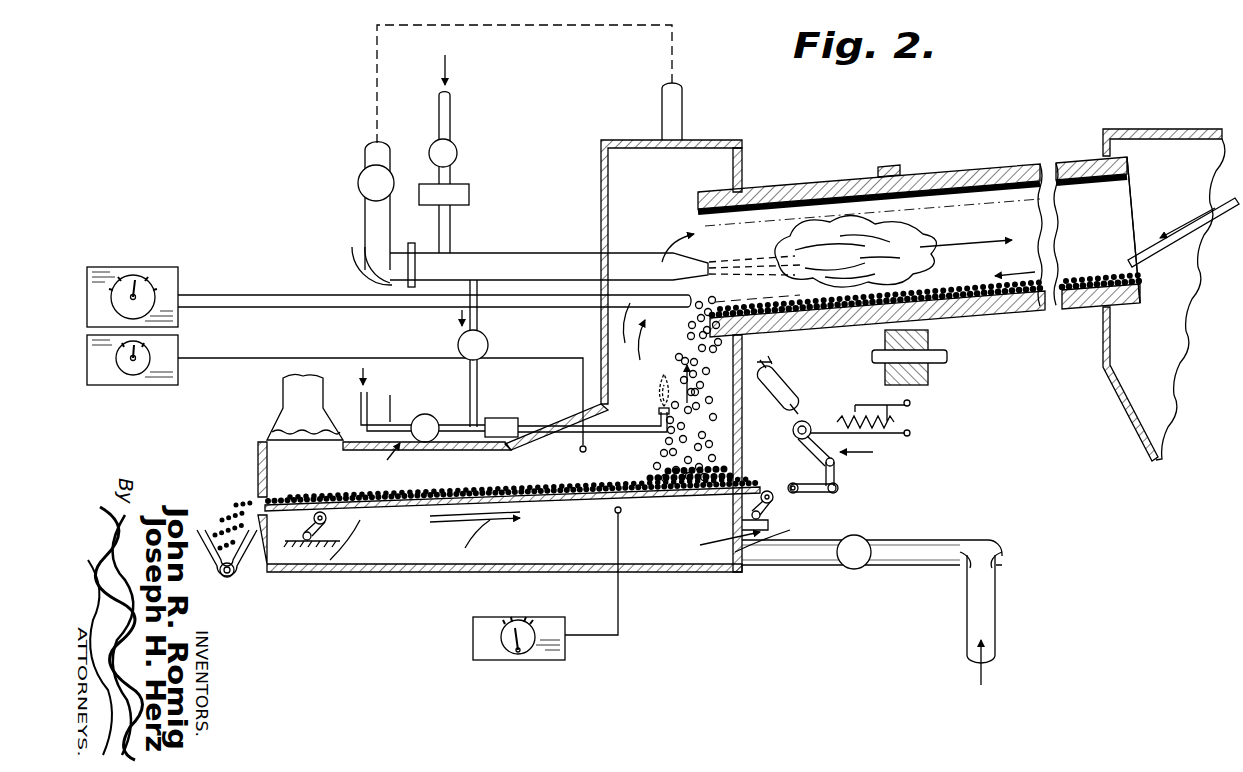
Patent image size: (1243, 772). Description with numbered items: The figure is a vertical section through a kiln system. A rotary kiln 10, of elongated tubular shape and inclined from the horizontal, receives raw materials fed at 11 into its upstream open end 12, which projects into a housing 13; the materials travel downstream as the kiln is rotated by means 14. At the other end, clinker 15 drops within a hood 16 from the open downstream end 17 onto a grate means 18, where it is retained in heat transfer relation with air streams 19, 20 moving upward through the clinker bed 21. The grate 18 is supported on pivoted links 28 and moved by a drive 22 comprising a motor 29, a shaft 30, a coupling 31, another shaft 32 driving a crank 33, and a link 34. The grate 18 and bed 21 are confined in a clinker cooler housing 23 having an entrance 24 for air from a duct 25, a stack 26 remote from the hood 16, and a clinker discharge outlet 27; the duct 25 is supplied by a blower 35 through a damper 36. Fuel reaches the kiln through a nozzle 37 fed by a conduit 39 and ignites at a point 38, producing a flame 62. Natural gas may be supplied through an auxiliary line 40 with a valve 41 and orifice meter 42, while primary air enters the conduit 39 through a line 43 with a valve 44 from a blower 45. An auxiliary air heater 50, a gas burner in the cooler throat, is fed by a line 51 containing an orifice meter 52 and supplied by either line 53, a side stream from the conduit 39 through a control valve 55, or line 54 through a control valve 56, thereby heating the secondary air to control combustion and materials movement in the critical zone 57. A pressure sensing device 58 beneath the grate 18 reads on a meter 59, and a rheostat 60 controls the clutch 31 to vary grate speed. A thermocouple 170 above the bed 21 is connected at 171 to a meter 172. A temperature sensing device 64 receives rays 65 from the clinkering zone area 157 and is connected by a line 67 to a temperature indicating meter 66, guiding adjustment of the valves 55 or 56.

The rotary kiln 10 is at (985, 323).
The raw materials feed 11 is at (1138, 258).
The upstream open end 12 is at (1134, 200).
The housing 13 is at (1178, 128).
The kiln rotating means 14 is at (930, 384).
The clinker 15 is at (688, 350).
The hood 16 is at (601, 350).
The downstream open end 17 is at (700, 222).
The grate means 18 is at (578, 505).
The air stream 19 is at (555, 535).
The air stream 20 is at (700, 412).
The clinker bed 21 is at (585, 482).
The drive 22 is at (869, 454).
The clinker cooler housing 23 is at (370, 572).
The entrance 24 is at (748, 566).
The duct 25 is at (800, 539).
The stack 26 is at (283, 388).
The clinker discharge outlet 27 is at (258, 503).
The pivoted links 28 is at (325, 521).
The motor 29 is at (778, 384).
The shaft 30 is at (805, 414).
The coupling 31 is at (793, 432).
The shaft 32 is at (815, 459).
The crank 33 is at (838, 466).
The link 34 is at (836, 490).
The blower 35 is at (1002, 560).
The damper 36 is at (853, 569).
The nozzle 37 is at (700, 255).
The ignition point 38 is at (776, 256).
The conduit 39 is at (573, 253).
The auxiliary line 40 is at (450, 112).
The valve 41 is at (458, 153).
The orifice meter 42 is at (470, 194).
The primary air line 43 is at (365, 216).
The valve 44 is at (358, 176).
The blower 45 is at (352, 247).
The auxiliary air heater 50 is at (658, 412).
The gas line 51 is at (603, 436).
The orifice meter 52 is at (513, 418).
The line 53 is at (478, 382).
The line 54 is at (369, 410).
The control valve 55 is at (488, 345).
The control valve 56 is at (432, 418).
The critical zone 57 is at (968, 262).
The pressure sensing device 58 is at (621, 512).
The meter 59 is at (530, 660).
The rheostat 60 is at (864, 412).
The flame 62 is at (854, 228).
The temperature sensing device 64 is at (680, 307).
The rays 65 is at (750, 311).
The temperature indicating meter 66 is at (120, 277).
The line 67 is at (320, 308).
The clinkering zone area 157 is at (872, 287).
The thermocouple 170 is at (580, 451).
The connection 171 is at (274, 361).
The meter 172 is at (148, 386).